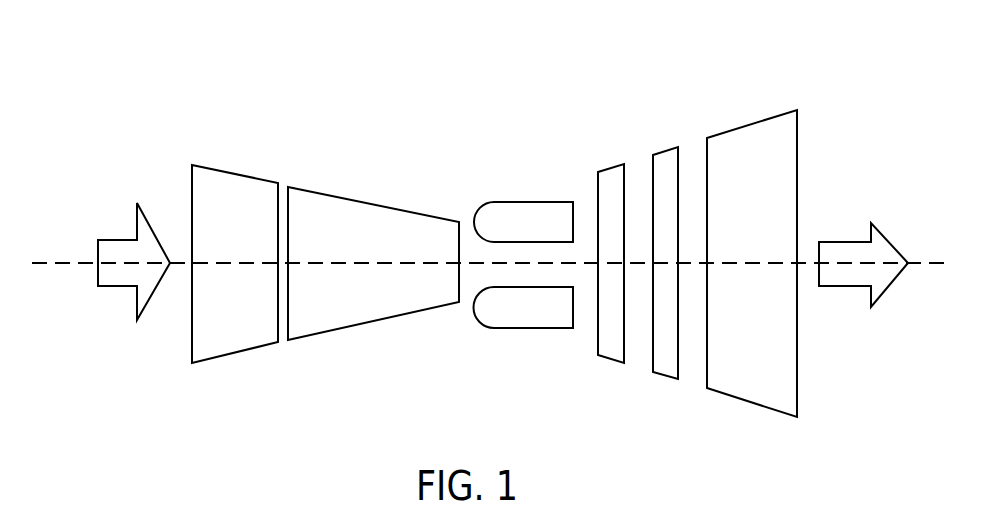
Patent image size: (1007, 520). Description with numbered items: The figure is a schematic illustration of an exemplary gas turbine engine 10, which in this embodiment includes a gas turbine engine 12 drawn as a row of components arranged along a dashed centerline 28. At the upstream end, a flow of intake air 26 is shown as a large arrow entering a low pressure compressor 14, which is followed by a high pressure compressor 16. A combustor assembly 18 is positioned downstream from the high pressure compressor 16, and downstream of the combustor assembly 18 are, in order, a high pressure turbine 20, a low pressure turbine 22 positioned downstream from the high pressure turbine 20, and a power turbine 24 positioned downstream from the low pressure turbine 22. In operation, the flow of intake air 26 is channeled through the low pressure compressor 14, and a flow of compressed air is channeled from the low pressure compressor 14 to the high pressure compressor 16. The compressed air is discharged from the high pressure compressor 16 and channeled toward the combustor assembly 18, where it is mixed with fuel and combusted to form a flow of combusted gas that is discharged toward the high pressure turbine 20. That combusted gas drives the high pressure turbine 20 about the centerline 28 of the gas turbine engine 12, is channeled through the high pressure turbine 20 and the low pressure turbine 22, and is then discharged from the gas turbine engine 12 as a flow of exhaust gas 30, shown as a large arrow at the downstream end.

The gas turbine engine 10 is at (288, 70).
The gas turbine engine 12 is at (428, 107).
The low pressure compressor 14 is at (242, 175).
The high pressure compressor 16 is at (361, 202).
The combustor assembly 18 is at (534, 202).
The high pressure turbine 20 is at (612, 168).
The low pressure turbine 22 is at (665, 152).
The power turbine 24 is at (758, 122).
The flow of intake air 26 is at (110, 239).
The centerline 28 is at (744, 262).
The flow of exhaust gas 30 is at (835, 241).